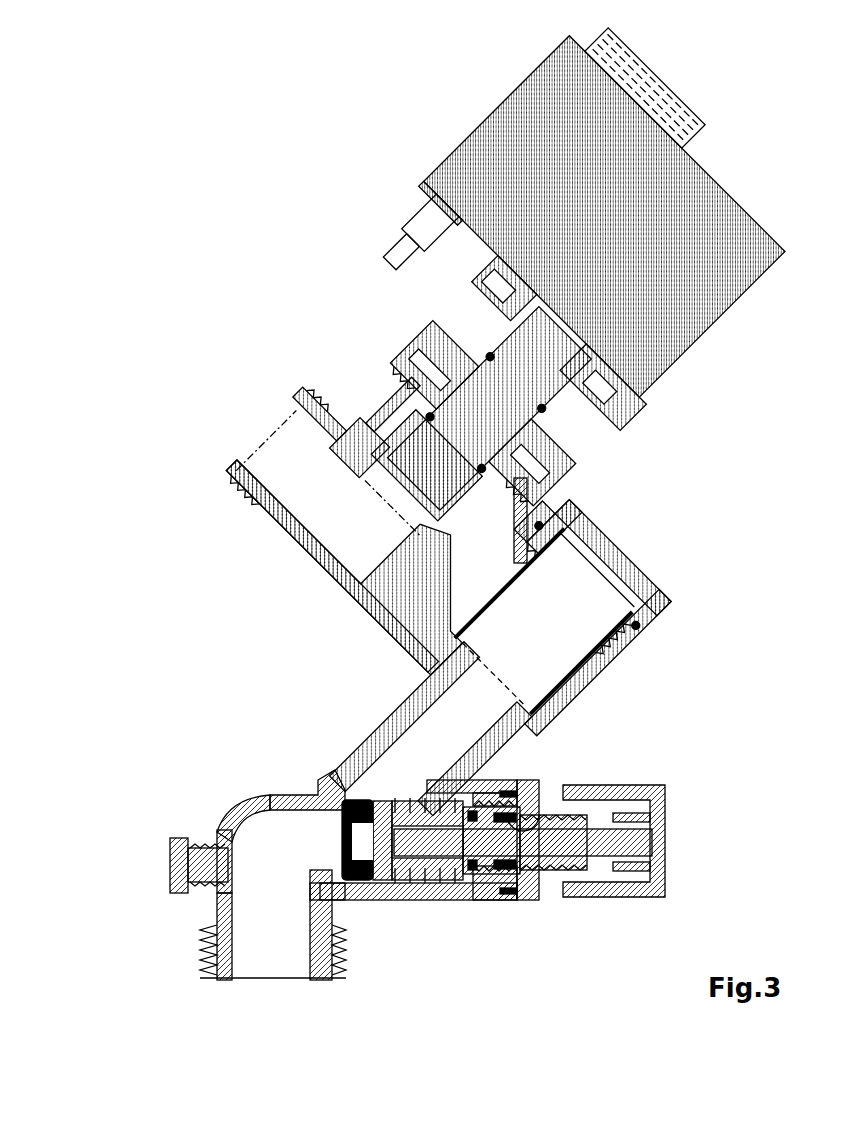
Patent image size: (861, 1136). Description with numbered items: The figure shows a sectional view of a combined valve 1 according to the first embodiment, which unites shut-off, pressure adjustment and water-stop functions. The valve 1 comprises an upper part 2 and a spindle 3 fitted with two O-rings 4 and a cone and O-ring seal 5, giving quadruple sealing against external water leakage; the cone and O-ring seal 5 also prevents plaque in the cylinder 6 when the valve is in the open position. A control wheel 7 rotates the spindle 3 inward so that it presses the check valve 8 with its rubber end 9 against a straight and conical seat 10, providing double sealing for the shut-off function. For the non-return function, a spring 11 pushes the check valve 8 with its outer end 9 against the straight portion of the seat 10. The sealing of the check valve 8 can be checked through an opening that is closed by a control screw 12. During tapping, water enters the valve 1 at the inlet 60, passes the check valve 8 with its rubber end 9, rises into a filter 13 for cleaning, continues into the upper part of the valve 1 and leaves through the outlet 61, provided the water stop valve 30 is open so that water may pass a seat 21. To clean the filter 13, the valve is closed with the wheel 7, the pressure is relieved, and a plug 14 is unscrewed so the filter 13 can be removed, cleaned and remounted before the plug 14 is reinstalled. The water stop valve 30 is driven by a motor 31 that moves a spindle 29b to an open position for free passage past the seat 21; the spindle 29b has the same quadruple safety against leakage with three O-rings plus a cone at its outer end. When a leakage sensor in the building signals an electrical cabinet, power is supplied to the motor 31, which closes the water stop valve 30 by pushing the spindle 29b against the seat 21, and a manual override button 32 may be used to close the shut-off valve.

The valve 1 is at (462, 900).
The upper part 2 is at (526, 900).
The spindle 3 is at (556, 860).
The O-rings 4 is at (538, 818).
The cone and O-ring seal 5 is at (490, 795).
The cylinder 6 is at (488, 876).
The control wheel 7 is at (593, 897).
The check valve 8 is at (381, 880).
The rubber end 9 is at (355, 880).
The seat 10 is at (332, 812).
The spring 11 is at (430, 880).
The control screw 12 is at (170, 860).
The filter 13 is at (570, 680).
The plug 14 is at (665, 598).
The seat 21 is at (335, 468).
The spindle 29b is at (425, 460).
The water stop valve 30 is at (555, 447).
The motor 31 is at (642, 187).
The manual override button 32 is at (638, 80).
The inlet 60 is at (283, 928).
The outlet 61 is at (282, 448).